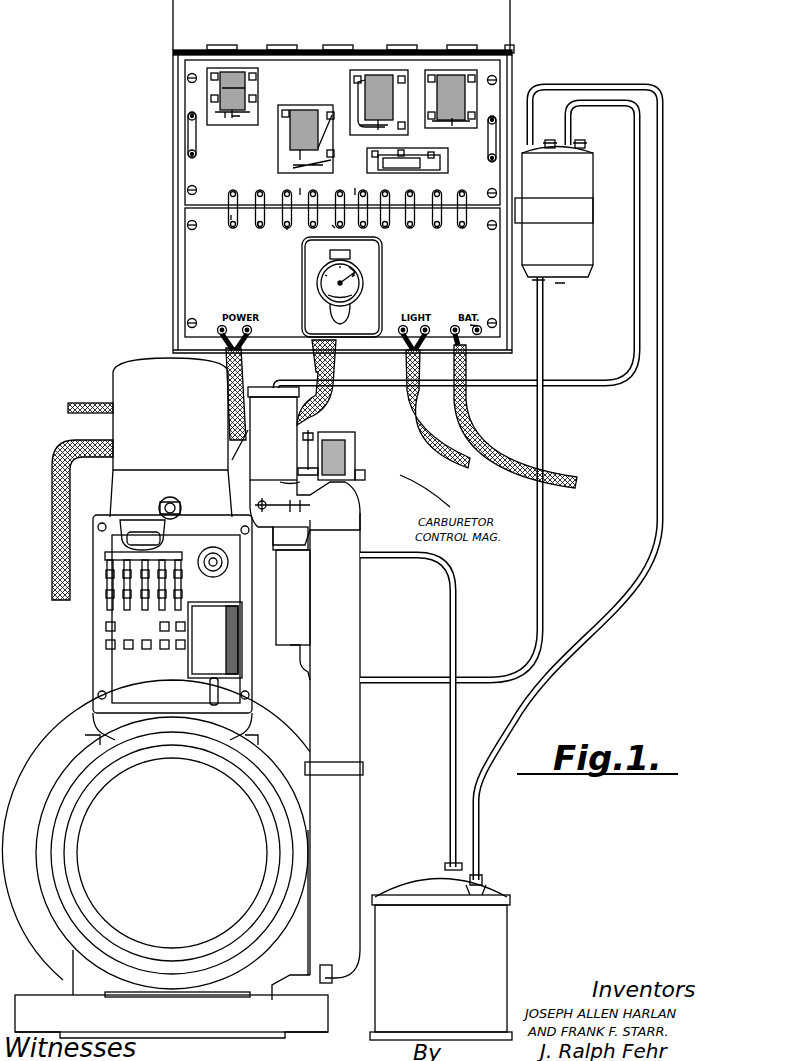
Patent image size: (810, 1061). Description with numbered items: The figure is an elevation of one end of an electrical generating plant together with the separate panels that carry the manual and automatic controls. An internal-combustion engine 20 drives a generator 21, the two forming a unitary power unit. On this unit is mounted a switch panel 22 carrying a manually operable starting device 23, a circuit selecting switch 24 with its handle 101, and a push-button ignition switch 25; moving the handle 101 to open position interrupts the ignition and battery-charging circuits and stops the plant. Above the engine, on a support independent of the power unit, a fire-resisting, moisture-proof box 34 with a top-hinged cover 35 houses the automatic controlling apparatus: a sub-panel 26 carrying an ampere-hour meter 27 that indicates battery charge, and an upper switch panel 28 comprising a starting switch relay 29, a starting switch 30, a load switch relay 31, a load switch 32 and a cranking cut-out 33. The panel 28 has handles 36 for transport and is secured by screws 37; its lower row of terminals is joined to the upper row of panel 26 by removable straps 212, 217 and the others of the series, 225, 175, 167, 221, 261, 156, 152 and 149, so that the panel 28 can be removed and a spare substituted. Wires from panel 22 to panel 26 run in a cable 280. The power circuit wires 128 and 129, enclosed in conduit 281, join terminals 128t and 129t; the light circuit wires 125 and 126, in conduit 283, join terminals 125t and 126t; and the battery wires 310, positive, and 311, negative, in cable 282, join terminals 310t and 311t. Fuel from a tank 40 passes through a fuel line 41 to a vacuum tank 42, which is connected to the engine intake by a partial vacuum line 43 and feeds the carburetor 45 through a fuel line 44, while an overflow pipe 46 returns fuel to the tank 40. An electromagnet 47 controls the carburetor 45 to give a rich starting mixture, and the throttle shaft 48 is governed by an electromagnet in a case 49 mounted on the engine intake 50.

The internal-combustion engine 20 is at (120, 382).
The generator 21 is at (176, 822).
The switch panel 22 is at (113, 660).
The manually operable starting device 23 is at (245, 615).
The circuit selecting switch 24 is at (152, 634).
The push button operated ignition switch 25 is at (215, 552).
The switch panel 26 is at (197, 260).
The ampere-hour meter 27 is at (318, 322).
The switch panel 28 is at (197, 168).
The starting switch relay 29 is at (447, 85).
The starting switch 30 is at (370, 80).
The load switch relay 31 is at (232, 76).
The load switch 32 is at (298, 112).
The cranking cut-out 33 is at (410, 172).
The box 34 is at (175, 105).
The cover 35 is at (185, 12).
The handles 36 is at (190, 133).
The screws 37 is at (190, 190).
The fuel tank 40 is at (490, 935).
The fuel line 41 is at (658, 448).
The vacuum tank 42 is at (578, 182).
The partial vacuum line 43 is at (592, 388).
The fuel line 44 is at (545, 528).
The engine carburetor 45 is at (308, 535).
The overflow pipe 46 is at (450, 738).
The electromagnet 47 is at (357, 456).
The throttle shaft 48 is at (305, 505).
The case 49 is at (301, 423).
The engine intake 50 is at (240, 505).
The handle 101 is at (137, 525).
The line wire 125 is at (424, 342).
The terminal 125t is at (427, 326).
The line wire 126 is at (404, 342).
The terminal 126t is at (401, 326).
The line wire 128 is at (246, 343).
The terminal 128t is at (262, 312).
The line wire 129 is at (222, 343).
The terminal 129t is at (218, 326).
The terminal lead 149 is at (463, 228).
The terminal lead 152 is at (438, 228).
The terminal lead 156 is at (388, 226).
The terminal lead 167 is at (332, 225).
The terminal lead 175 is at (312, 190).
The strap 212 is at (234, 221).
The strap 217 is at (258, 222).
The terminal lead 221 is at (368, 190).
The terminal lead 225 is at (287, 230).
The terminal lead 261 is at (410, 228).
The cable 280 is at (54, 475).
The conduit 281 is at (75, 415).
The cable 282 is at (510, 472).
The conduit 283 is at (440, 440).
The wire 310 is at (478, 340).
The terminal 310t is at (484, 333).
The wire 311 is at (455, 326).
The terminal 311t is at (470, 325).